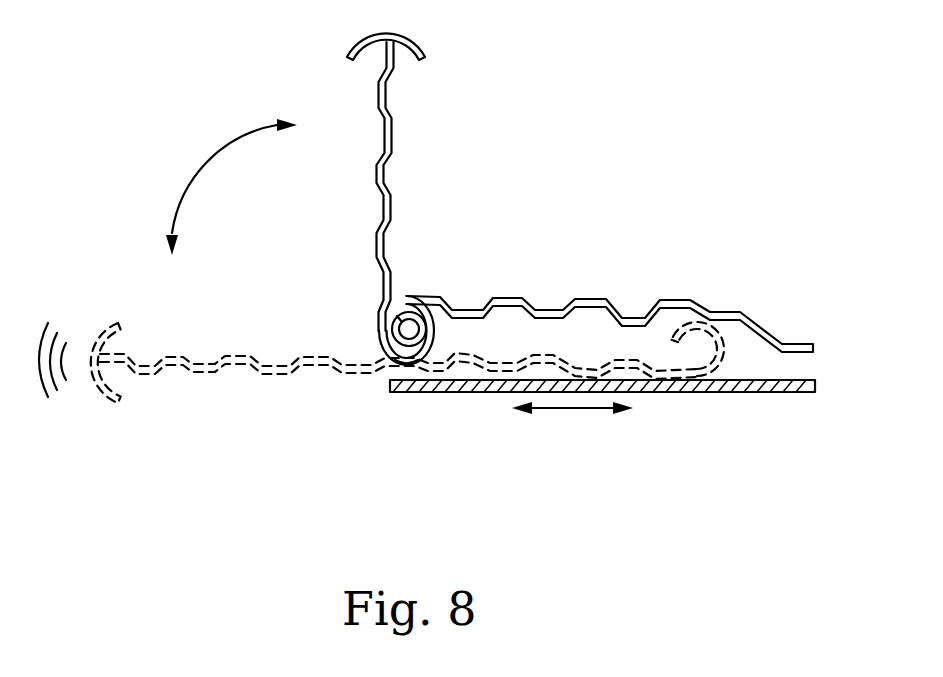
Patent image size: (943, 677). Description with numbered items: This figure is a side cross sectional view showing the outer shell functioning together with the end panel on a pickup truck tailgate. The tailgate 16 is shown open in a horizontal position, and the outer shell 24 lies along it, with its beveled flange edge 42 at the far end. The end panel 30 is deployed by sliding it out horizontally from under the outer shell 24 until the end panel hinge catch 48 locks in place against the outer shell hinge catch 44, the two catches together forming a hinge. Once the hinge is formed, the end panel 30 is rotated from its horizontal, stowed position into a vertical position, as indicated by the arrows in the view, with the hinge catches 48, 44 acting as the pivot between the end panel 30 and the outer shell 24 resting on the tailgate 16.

The tailgate 16 is at (737, 392).
The outer shell 24 is at (596, 275).
The end panel 30 is at (352, 219).
The beveled flange edge 42 is at (798, 318).
The outer shell hinge catch 44 is at (420, 278).
The end panel hinge catch 48 is at (405, 385).